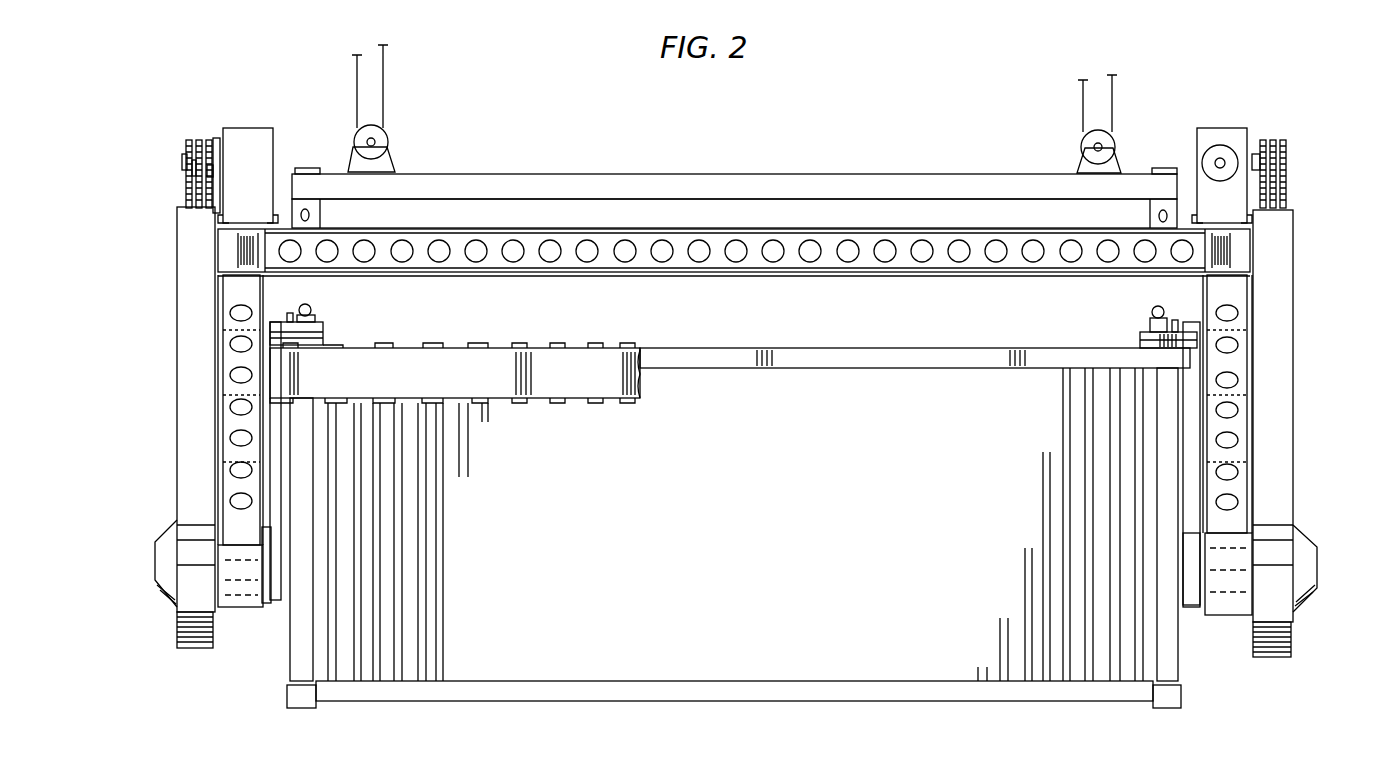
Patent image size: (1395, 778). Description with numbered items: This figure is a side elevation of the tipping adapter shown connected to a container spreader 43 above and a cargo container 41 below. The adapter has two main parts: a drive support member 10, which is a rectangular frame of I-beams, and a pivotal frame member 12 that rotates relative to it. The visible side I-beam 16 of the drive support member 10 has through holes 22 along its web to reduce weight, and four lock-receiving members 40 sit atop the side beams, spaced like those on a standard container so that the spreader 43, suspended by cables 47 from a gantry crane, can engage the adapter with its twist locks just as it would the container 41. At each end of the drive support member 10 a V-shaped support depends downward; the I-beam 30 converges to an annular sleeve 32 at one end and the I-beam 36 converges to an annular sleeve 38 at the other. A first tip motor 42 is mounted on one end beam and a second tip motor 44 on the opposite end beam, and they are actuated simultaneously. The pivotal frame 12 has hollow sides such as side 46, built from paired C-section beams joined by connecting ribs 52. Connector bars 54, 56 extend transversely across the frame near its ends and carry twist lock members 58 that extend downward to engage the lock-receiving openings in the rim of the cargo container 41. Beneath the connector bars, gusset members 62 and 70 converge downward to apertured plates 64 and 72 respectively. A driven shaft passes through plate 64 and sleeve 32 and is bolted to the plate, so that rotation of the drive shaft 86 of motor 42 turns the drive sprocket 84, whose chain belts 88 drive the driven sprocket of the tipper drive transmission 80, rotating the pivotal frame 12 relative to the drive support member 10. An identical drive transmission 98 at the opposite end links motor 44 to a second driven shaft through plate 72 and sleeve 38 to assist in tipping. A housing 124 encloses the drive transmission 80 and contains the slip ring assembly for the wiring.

The drive support member 10 is at (908, 285).
The pivotal frame member 12 is at (402, 329).
The side I-beam 16 is at (795, 262).
The through holes 22 is at (232, 407).
The I-beam 30 is at (225, 292).
The annular sleeve 32 is at (240, 605).
The I-beam 36 is at (1238, 361).
The annular sleeve 38 is at (1240, 615).
The lock-receiving members 40 is at (316, 216).
The cargo container 41 is at (622, 685).
The first tip motor 42 is at (252, 138).
The container spreader 43 is at (780, 184).
The second tip motor 44 is at (1228, 142).
The side 46 is at (607, 360).
The cables 47 is at (388, 77).
The connecting ribs 52 is at (556, 342).
The connector bar 54 is at (324, 335).
The connector bar 56 is at (1140, 338).
The twist lock members 58 is at (320, 309).
The gusset member 62 is at (276, 487).
The plate 64 is at (274, 605).
The gusset member 70 is at (1192, 456).
The plate 72 is at (1190, 605).
The tipper drive transmission 80 is at (160, 130).
The drive sprocket 84 is at (182, 164).
The drive shaft 86 is at (212, 136).
The chain belts 88 is at (186, 192).
The drive transmission 98 is at (1318, 136).
The housing 124 is at (187, 378).